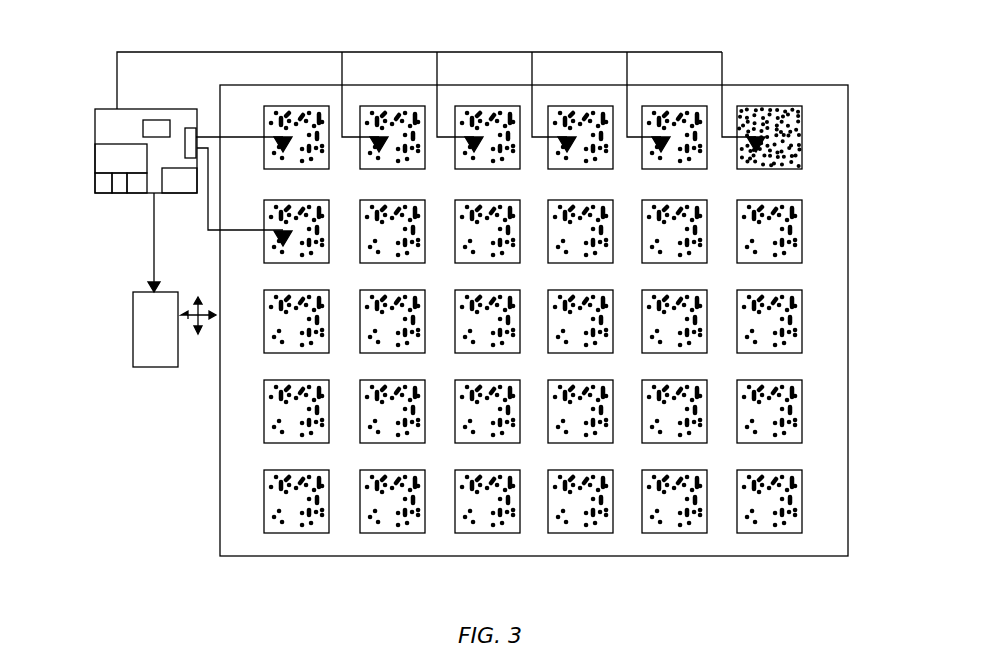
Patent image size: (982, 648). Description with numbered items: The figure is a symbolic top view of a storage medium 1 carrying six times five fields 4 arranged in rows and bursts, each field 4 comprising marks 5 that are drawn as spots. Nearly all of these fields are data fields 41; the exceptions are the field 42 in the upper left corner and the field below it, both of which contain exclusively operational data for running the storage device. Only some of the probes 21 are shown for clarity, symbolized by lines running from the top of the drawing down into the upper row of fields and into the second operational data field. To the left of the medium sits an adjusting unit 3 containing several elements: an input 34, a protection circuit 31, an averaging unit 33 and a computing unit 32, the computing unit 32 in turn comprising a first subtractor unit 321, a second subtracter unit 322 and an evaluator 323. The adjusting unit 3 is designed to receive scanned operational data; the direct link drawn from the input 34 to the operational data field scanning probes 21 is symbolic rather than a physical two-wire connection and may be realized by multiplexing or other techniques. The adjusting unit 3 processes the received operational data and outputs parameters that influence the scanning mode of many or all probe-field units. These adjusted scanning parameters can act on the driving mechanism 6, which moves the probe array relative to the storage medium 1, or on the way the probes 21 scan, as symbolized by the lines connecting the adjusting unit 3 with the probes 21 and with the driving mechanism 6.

The storage medium 1 is at (758, 85).
The adjusting unit 3 is at (120, 171).
The field 4 is at (498, 349).
The mark 5 is at (685, 390).
The driving mechanism 6 is at (165, 367).
The probe 21 is at (240, 138).
The protection circuit 31 is at (185, 185).
The computing unit 32 is at (103, 157).
The averaging unit 33 is at (157, 128).
The input 34 is at (192, 133).
The data field 41 is at (395, 167).
The field 42 is at (293, 167).
The first subtractor unit 321 is at (103, 182).
The second subtracter unit 322 is at (122, 192).
The evaluator 323 is at (138, 192).